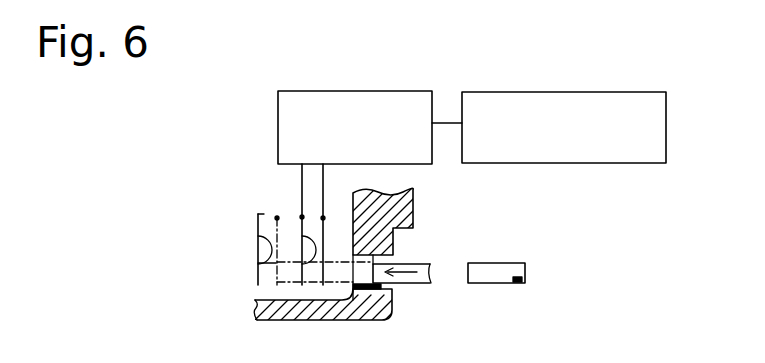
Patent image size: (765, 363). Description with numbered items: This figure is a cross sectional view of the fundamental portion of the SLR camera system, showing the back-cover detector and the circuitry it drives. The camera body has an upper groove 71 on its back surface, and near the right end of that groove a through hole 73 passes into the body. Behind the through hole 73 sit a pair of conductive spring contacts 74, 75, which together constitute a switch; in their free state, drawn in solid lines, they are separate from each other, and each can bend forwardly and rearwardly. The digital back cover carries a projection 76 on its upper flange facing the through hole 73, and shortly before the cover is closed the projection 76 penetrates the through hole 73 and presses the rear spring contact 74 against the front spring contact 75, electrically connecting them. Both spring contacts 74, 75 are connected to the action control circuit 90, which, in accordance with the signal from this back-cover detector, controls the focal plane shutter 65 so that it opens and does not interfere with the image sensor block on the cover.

The action control circuit 90 is at (431, 163).
The focal plane shutter 65 is at (640, 163).
The rear spring contact 74 is at (274, 215).
The front spring contact 75 is at (258, 224).
The projection 76 is at (420, 263).
The through hole 73 is at (388, 289).
The upper groove 71 is at (422, 307).